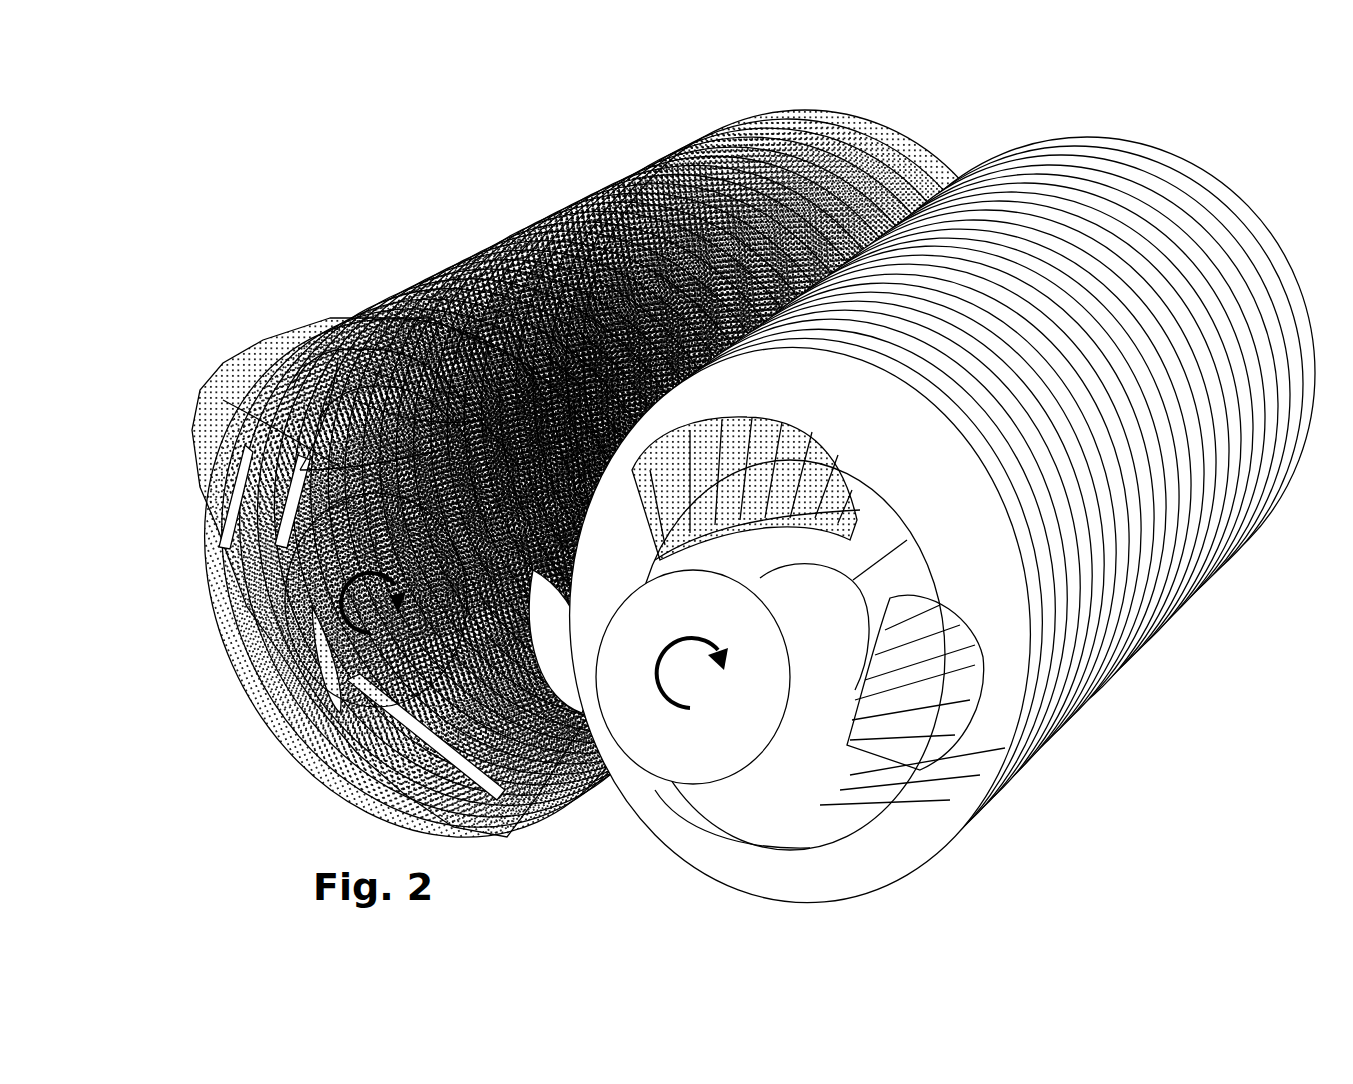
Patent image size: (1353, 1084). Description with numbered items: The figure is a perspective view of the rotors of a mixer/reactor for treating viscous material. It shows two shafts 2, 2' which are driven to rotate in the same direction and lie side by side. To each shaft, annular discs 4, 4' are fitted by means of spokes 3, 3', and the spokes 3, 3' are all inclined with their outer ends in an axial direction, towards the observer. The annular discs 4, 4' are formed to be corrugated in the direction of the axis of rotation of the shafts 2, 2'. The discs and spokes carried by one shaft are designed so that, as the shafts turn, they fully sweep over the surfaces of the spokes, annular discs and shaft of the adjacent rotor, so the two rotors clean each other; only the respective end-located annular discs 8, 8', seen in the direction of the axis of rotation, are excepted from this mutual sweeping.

The shaft 2 is at (866, 711).
The shaft 2' is at (346, 631).
The spokes 3 is at (893, 625).
The spokes 3' is at (397, 577).
The annular discs 4 is at (997, 700).
The annular discs 4' is at (349, 540).
The end-located annular disc 8 is at (937, 520).
The end-located annular disc 8' is at (575, 509).